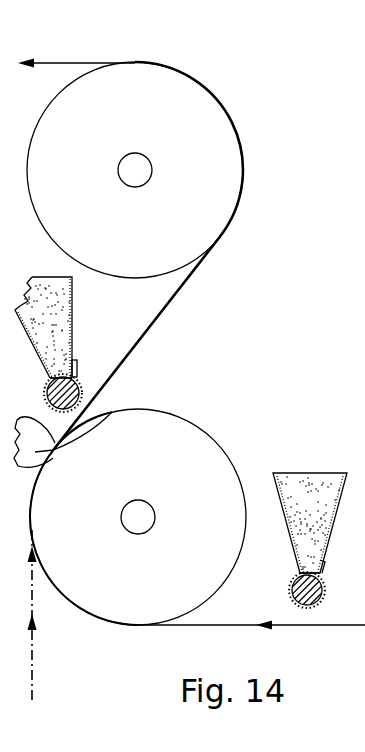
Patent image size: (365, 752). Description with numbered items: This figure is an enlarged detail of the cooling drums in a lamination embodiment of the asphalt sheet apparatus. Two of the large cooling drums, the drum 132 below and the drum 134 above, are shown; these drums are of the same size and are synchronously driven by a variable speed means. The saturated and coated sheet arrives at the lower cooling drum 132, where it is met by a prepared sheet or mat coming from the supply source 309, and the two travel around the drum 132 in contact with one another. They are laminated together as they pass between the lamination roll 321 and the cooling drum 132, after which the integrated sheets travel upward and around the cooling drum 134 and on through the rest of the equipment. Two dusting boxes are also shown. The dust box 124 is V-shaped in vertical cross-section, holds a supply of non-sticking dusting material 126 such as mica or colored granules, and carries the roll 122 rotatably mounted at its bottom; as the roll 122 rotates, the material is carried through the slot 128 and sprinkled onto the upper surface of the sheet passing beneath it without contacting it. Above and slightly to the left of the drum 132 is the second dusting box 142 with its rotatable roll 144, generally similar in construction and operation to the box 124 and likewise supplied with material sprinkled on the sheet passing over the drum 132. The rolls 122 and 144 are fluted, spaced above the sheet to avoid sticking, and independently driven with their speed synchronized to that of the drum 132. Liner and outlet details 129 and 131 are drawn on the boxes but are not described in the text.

The cooling drum 134 is at (193, 123).
The cooling drum 132 is at (167, 460).
The lamination roll 321 is at (112, 412).
The second dusting box 142 is at (60, 320).
The dust box 124 is at (278, 488).
The dusting material 126 is at (308, 493).
The hopper liner 129 is at (70, 355).
The hopper outlet member 131 is at (77, 367).
The slot 128 is at (78, 378).
The rotatable roll 144 is at (47, 397).
The roll 122 is at (292, 597).
The supply source 309 is at (34, 622).